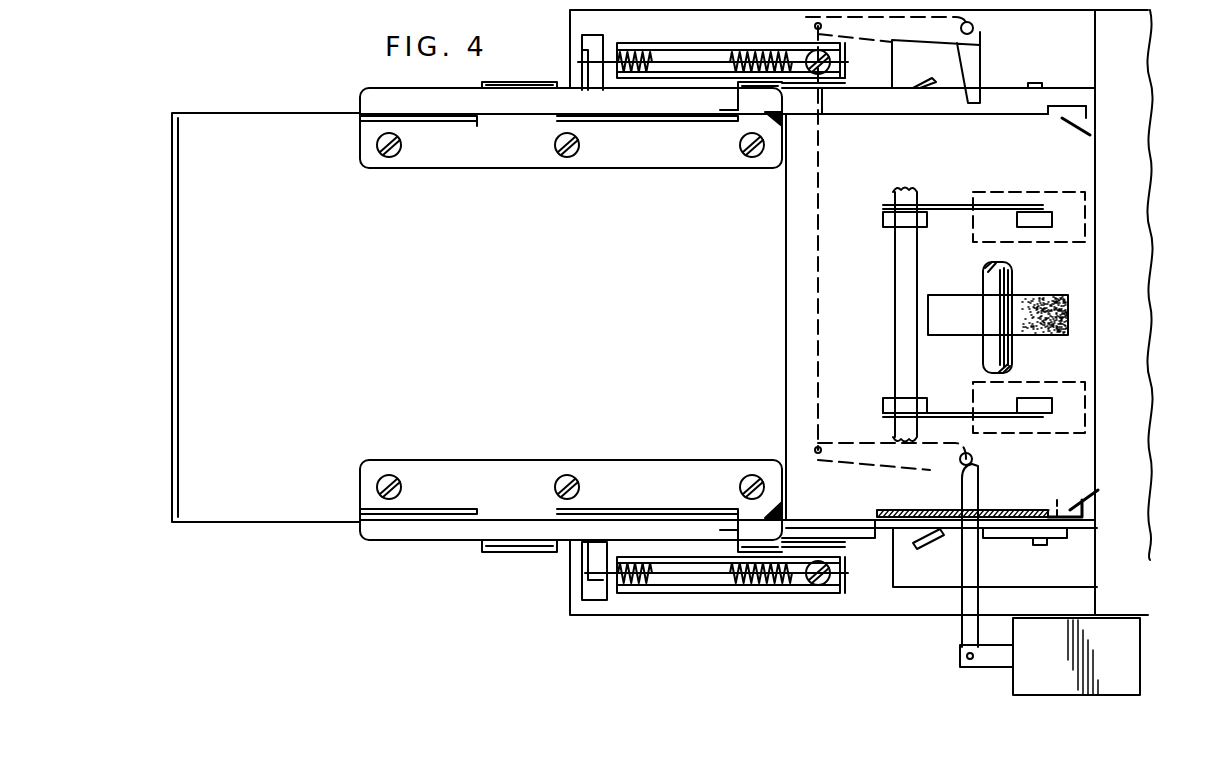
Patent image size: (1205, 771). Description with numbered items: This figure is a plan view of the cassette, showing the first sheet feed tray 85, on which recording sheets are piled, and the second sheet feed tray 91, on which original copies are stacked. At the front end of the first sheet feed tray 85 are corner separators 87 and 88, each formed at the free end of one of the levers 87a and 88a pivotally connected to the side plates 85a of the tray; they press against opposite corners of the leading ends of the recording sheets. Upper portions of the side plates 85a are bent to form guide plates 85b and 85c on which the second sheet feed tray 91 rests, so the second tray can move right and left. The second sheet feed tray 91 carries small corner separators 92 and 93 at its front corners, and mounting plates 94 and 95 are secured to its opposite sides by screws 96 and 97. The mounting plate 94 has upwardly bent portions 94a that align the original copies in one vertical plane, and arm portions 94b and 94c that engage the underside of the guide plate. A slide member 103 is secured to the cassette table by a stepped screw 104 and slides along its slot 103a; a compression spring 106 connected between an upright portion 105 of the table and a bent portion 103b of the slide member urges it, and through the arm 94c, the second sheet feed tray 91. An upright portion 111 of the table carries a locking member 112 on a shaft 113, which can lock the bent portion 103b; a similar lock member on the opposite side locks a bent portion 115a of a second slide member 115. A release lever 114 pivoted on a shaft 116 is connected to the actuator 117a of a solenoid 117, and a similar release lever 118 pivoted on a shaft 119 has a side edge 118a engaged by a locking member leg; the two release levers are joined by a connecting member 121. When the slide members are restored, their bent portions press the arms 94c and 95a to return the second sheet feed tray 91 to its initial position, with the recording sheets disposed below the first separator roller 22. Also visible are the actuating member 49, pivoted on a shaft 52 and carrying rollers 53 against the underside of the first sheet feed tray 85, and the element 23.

The first separator roller 22 is at (1060, 296).
The tape guide roller 23 is at (1007, 338).
The actuating member 49 is at (943, 412).
The shaft 52 is at (895, 282).
The rollers 53 is at (1030, 228).
The first sheet feed tray 85 is at (1073, 270).
The side plates 85a is at (1000, 509).
The guide plate 85b is at (398, 541).
The guide plate 85c is at (386, 94).
The corner separator 87 is at (1090, 481).
The lever 87a is at (1057, 500).
The corner separator 88 is at (1088, 128).
The lever 88a is at (1062, 117).
The second sheet feed tray 91 is at (264, 121).
The corner separator 92 is at (778, 512).
The corner separator 93 is at (772, 130).
The mounting plate 94 is at (460, 461).
The upwardly bent portions 94a is at (478, 122).
The arm portion 94b is at (482, 548).
The arm portion 94c is at (736, 528).
The mounting plate 95 is at (462, 166).
The arm 95a is at (826, 88).
The screw 96 is at (566, 475).
The screw 97 is at (569, 158).
The slide member 103 is at (626, 592).
The slot 103a is at (702, 580).
The bent portion 103b is at (840, 590).
The stepped screw 104 is at (817, 588).
The upright portion 105 is at (580, 565).
The compression spring 106 is at (752, 590).
The upright portion 111 is at (942, 541).
The locking member 112 is at (1010, 540).
The shaft 113 is at (1043, 545).
The release lever 114 is at (958, 640).
The slide member 115 is at (640, 50).
The bent portion 115a is at (845, 82).
The shaft 116 is at (955, 462).
The solenoid 117 is at (1140, 667).
The actuator 117a is at (990, 668).
The release lever 118 is at (832, 62).
The side edge 118a is at (982, 60).
The shaft 119 is at (974, 28).
The connecting member 121 is at (821, 275).